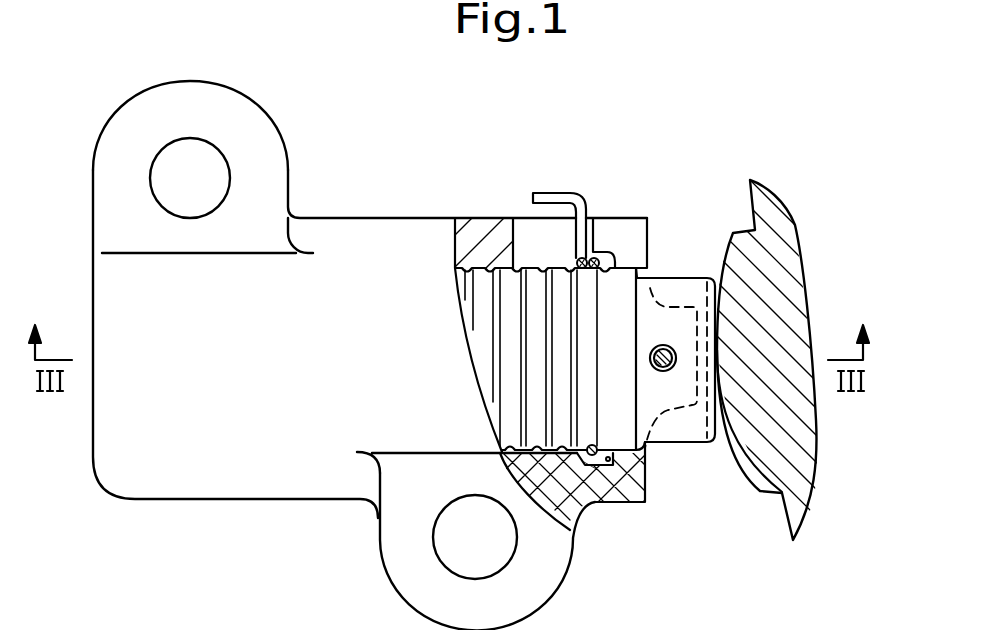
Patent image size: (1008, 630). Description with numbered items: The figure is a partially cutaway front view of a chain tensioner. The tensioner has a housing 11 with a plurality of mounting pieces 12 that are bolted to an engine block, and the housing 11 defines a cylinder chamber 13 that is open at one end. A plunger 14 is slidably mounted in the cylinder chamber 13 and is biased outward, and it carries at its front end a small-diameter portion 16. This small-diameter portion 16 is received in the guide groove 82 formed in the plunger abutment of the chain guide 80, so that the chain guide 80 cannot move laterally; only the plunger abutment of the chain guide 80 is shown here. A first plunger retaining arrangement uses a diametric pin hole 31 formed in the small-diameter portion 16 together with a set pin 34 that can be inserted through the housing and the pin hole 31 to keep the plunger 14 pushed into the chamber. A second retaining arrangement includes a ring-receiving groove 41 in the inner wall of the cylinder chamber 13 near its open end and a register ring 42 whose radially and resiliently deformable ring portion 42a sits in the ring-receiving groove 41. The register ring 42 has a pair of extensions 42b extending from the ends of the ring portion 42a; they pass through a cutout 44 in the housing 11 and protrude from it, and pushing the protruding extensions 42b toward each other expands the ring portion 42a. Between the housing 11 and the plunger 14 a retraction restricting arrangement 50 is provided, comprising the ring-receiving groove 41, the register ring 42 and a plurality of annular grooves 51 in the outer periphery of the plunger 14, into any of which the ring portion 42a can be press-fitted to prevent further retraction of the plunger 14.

The housing 11 is at (336, 218).
The mounting pieces 12 is at (248, 115).
The cylinder chamber 13 is at (482, 275).
The plunger 14 is at (622, 268).
The small-diameter portion 16 is at (690, 277).
The pin hole 31 is at (668, 370).
The set pin 34 is at (674, 352).
The ring-receiving groove 41 is at (647, 493).
The register ring 42 is at (597, 247).
The ring portion 42a is at (605, 455).
The extensions 42b is at (578, 258).
The cutout 44 is at (638, 247).
The retraction restricting arrangement 50 is at (563, 260).
The annular grooves 51 is at (598, 470).
The chain guide 80 is at (797, 300).
The guide groove 82 is at (733, 440).